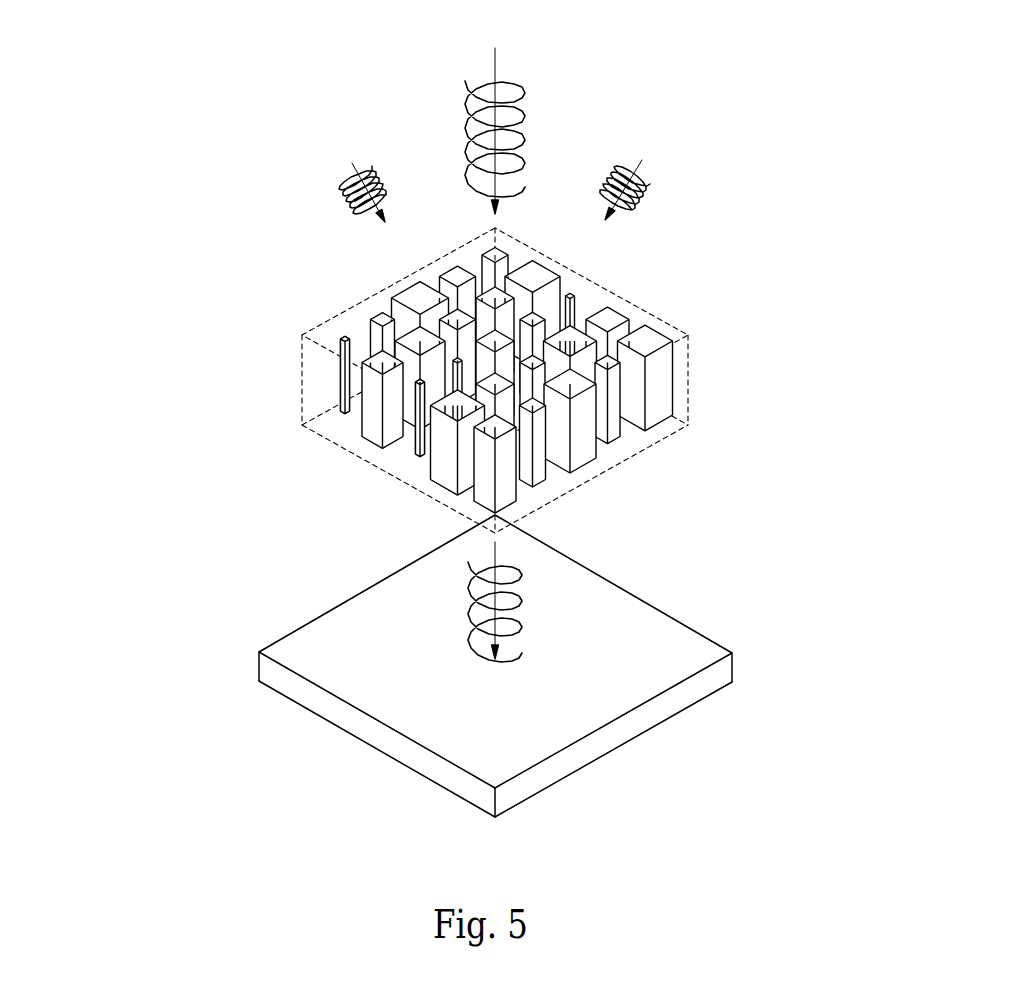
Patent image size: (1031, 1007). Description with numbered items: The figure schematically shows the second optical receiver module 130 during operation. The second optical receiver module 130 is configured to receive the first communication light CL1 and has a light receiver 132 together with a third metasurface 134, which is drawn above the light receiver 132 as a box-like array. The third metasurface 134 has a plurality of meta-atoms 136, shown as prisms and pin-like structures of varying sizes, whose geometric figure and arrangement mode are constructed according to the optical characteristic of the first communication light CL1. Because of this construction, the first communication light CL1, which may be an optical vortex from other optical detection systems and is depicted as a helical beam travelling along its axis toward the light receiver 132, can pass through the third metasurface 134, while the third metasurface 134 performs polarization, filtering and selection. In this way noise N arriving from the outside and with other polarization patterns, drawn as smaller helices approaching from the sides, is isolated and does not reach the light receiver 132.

The second optical receiver module 130 is at (988, 60).
The light receiver 132 is at (258, 668).
The third metasurface 134 is at (639, 307).
The meta-atoms 136 is at (374, 431).
The first communication light CL1 is at (497, 53).
The noise N is at (640, 162).